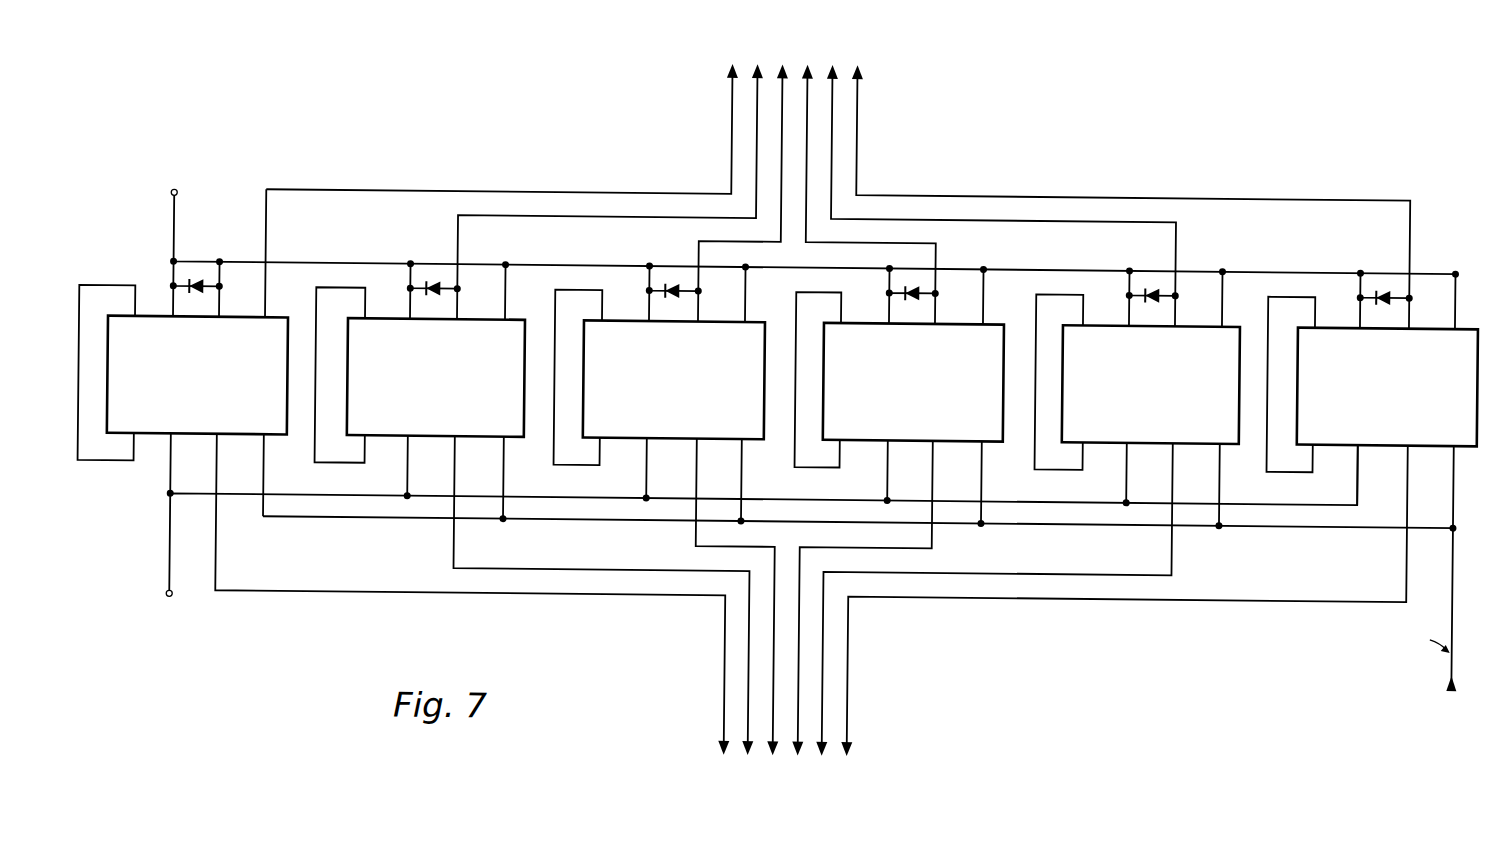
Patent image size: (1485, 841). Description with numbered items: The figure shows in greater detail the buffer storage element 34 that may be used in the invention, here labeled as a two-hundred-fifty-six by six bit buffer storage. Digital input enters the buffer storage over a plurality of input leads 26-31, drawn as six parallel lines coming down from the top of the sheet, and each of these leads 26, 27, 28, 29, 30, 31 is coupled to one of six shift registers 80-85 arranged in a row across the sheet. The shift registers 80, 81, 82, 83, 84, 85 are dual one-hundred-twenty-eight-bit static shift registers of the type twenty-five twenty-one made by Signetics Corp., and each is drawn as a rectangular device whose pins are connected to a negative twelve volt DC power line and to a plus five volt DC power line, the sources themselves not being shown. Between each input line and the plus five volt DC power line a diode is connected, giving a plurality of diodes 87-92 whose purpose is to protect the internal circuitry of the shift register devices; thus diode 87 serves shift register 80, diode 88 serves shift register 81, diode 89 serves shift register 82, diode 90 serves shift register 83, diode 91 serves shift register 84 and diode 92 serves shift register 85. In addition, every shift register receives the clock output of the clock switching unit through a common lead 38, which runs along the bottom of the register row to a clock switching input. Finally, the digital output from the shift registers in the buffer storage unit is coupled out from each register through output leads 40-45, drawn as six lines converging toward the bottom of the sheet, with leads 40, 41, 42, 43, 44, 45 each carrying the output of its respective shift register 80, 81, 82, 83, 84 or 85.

The input leads 26-31 is at (838, 164).
The input lead 26 is at (502, 126).
The input lead 27 is at (610, 176).
The input lead 28 is at (743, 178).
The input lead 29 is at (869, 179).
The input lead 30 is at (1001, 180).
The input lead 31 is at (866, 125).
The buffer storage element 34 is at (1430, 237).
The lead 38 is at (1452, 578).
The output leads 40-45 is at (810, 614).
The output lead 40 is at (473, 594).
The output lead 41 is at (604, 595).
The output lead 42 is at (738, 597).
The output lead 43 is at (862, 598).
The output lead 44 is at (994, 600).
The output lead 45 is at (866, 690).
The shift register 80 is at (108, 391).
The shift register 81 is at (345, 392).
The shift register 82 is at (583, 395).
The shift register 83 is at (823, 392).
The shift register 84 is at (1062, 394).
The shift register 85 is at (1297, 399).
The diode 87 is at (196, 285).
The diode 88 is at (431, 286).
The diode 89 is at (671, 286).
The diode 90 is at (911, 286).
The diode 91 is at (1149, 286).
The diode 92 is at (1387, 288).